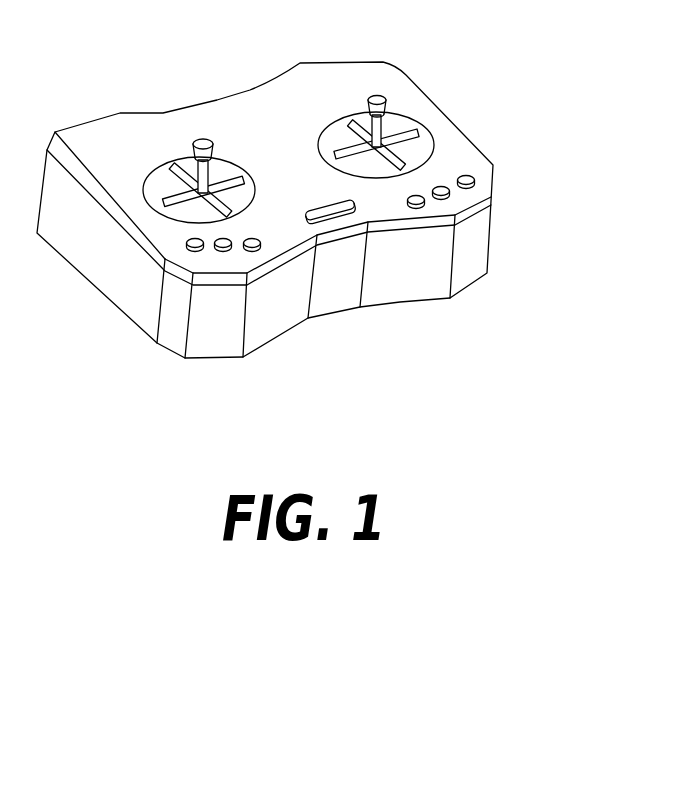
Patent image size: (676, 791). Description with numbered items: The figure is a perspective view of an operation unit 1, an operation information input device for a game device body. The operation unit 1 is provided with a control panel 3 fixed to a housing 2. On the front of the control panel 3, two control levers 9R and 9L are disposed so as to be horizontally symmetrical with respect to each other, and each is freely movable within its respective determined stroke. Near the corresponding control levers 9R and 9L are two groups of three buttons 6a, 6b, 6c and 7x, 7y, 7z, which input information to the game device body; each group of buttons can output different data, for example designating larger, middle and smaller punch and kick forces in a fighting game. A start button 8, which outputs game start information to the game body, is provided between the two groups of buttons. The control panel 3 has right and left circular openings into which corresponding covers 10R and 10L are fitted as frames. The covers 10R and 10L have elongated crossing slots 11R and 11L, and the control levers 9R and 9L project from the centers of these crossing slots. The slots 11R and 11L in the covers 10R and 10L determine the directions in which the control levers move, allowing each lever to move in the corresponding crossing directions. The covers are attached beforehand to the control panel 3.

The operation unit 1 is at (432, 48).
The housing 2 is at (246, 359).
The control panel 3 is at (115, 128).
The button 6a is at (458, 174).
The button 6b is at (449, 193).
The button 6c is at (424, 204).
The button 7x is at (195, 248).
The button 7y is at (223, 248).
The button 7z is at (252, 248).
The start button 8 is at (323, 222).
The control lever 9L is at (172, 168).
The control lever 9R is at (397, 125).
The cover 10L is at (233, 165).
The cover 10R is at (338, 128).
The slots 11L is at (218, 155).
The slots 11R is at (357, 118).